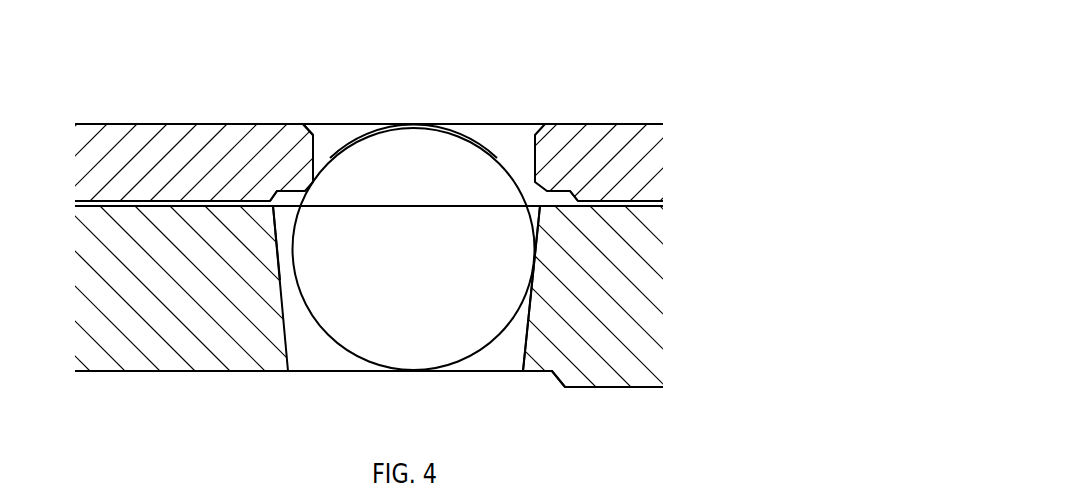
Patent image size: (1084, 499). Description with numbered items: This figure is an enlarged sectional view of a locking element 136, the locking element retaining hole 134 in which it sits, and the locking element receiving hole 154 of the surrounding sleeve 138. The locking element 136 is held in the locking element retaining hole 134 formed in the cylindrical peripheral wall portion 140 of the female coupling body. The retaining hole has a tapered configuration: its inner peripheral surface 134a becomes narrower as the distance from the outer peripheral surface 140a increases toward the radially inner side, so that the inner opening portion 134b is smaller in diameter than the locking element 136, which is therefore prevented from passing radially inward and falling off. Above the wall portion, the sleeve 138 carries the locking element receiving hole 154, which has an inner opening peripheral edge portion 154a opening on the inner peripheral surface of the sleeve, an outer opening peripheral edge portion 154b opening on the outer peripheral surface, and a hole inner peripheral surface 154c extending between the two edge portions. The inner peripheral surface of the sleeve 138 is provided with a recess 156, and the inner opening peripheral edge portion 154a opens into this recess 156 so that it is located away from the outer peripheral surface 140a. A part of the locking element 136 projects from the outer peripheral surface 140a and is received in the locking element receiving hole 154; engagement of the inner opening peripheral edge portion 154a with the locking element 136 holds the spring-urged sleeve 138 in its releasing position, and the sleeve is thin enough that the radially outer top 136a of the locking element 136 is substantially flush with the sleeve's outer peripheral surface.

The locking element retaining hole 134 is at (493, 357).
The inner peripheral surface 134a is at (527, 347).
The inner opening portion 134b is at (521, 370).
The locking element 136 is at (404, 243).
The radially outer top 136a is at (411, 128).
The sleeve 138 is at (633, 160).
The cylindrical peripheral wall portion 140 is at (622, 280).
The outer peripheral surface 140a is at (256, 206).
The locking element receiving hole 154 is at (505, 143).
The inner opening peripheral edge portion 154a is at (315, 207).
The outer opening peripheral edge portion 154b is at (314, 124).
The hole inner peripheral surface 154c is at (315, 158).
The recess 156 is at (291, 194).